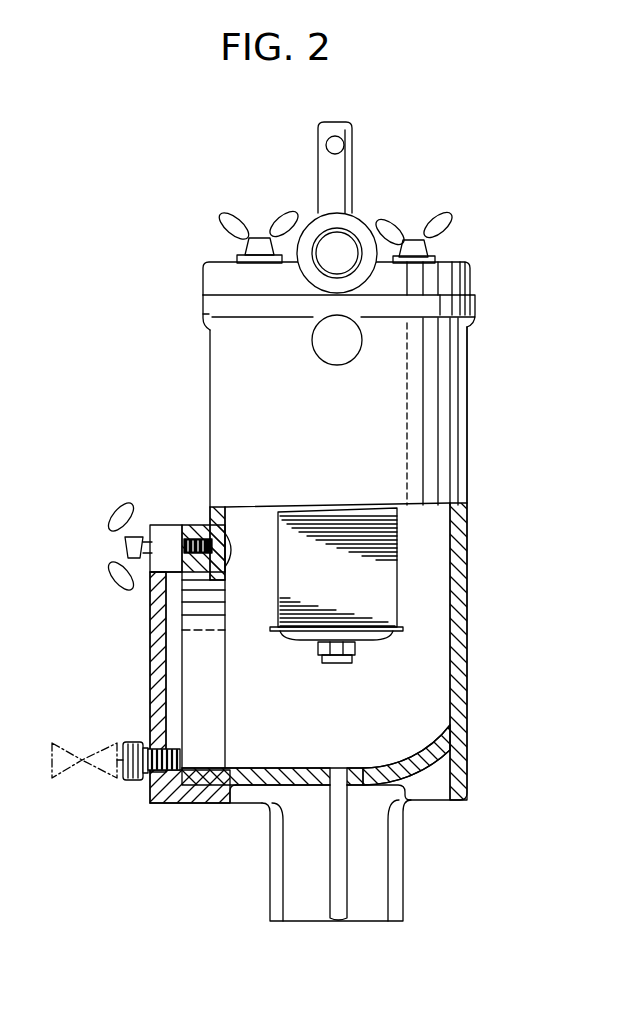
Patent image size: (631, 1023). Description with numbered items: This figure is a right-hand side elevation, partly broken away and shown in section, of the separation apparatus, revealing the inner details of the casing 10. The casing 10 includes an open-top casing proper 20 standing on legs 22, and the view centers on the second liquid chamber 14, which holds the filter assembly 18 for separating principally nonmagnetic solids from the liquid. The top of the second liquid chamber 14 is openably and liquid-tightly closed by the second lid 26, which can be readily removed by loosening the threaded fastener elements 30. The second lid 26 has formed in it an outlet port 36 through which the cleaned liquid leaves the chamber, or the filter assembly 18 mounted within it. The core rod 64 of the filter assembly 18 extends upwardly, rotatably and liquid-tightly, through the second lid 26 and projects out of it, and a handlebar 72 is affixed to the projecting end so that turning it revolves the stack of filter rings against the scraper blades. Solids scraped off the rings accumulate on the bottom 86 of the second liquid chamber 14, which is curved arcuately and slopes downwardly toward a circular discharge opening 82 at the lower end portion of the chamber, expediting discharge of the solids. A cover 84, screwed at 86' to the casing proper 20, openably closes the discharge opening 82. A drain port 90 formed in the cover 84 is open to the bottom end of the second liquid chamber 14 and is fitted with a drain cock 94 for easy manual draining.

The casing 10 is at (193, 293).
The second liquid chamber 14 is at (428, 614).
The filter assembly 18 is at (397, 533).
The casing proper 20 is at (450, 372).
The legs 22 is at (378, 865).
The second lid 26 is at (455, 277).
The threaded fastener elements 30 is at (259, 238).
The outlet port 36 is at (345, 234).
The core rod 64 is at (343, 170).
The handlebar 72 is at (326, 143).
The discharge opening 82 is at (210, 585).
The cover 84 is at (152, 643).
The bottom of second liquid chamber 86 is at (316, 743).
The screw 86' is at (107, 546).
The drain port 90 is at (180, 756).
The drain cock 94 is at (82, 760).